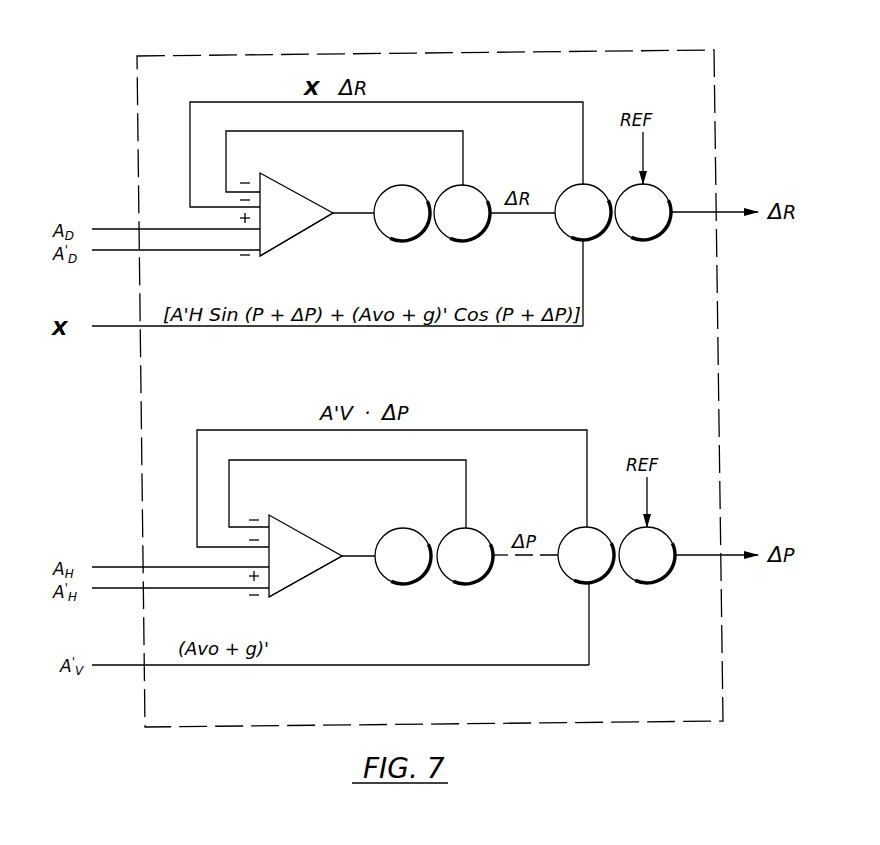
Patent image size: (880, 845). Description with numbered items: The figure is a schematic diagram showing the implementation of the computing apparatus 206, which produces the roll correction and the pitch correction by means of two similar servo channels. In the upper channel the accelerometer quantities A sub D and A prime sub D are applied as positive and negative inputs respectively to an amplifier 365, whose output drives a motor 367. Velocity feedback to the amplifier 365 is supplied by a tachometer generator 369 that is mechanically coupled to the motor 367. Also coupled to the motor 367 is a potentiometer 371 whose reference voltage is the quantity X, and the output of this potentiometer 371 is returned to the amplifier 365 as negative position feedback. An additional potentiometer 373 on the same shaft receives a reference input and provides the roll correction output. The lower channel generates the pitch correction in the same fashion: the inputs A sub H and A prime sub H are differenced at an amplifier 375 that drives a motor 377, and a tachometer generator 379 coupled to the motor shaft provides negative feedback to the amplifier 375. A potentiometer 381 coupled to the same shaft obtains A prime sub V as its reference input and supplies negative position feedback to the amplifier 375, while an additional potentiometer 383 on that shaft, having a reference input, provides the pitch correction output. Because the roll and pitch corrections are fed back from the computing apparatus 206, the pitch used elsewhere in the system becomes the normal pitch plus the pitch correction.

The computing apparatus 206 is at (658, 50).
The amplifier 365 is at (302, 195).
The motor 367 is at (395, 241).
The tachometer generator 369 is at (467, 241).
The potentiometer 371 is at (576, 239).
The additional potentiometer 373 is at (643, 241).
The amplifier 375 is at (306, 535).
The motor 377 is at (403, 585).
The tachometer generator 379 is at (470, 585).
The potentiometer 381 is at (578, 582).
The additional potentiometer 383 is at (647, 584).